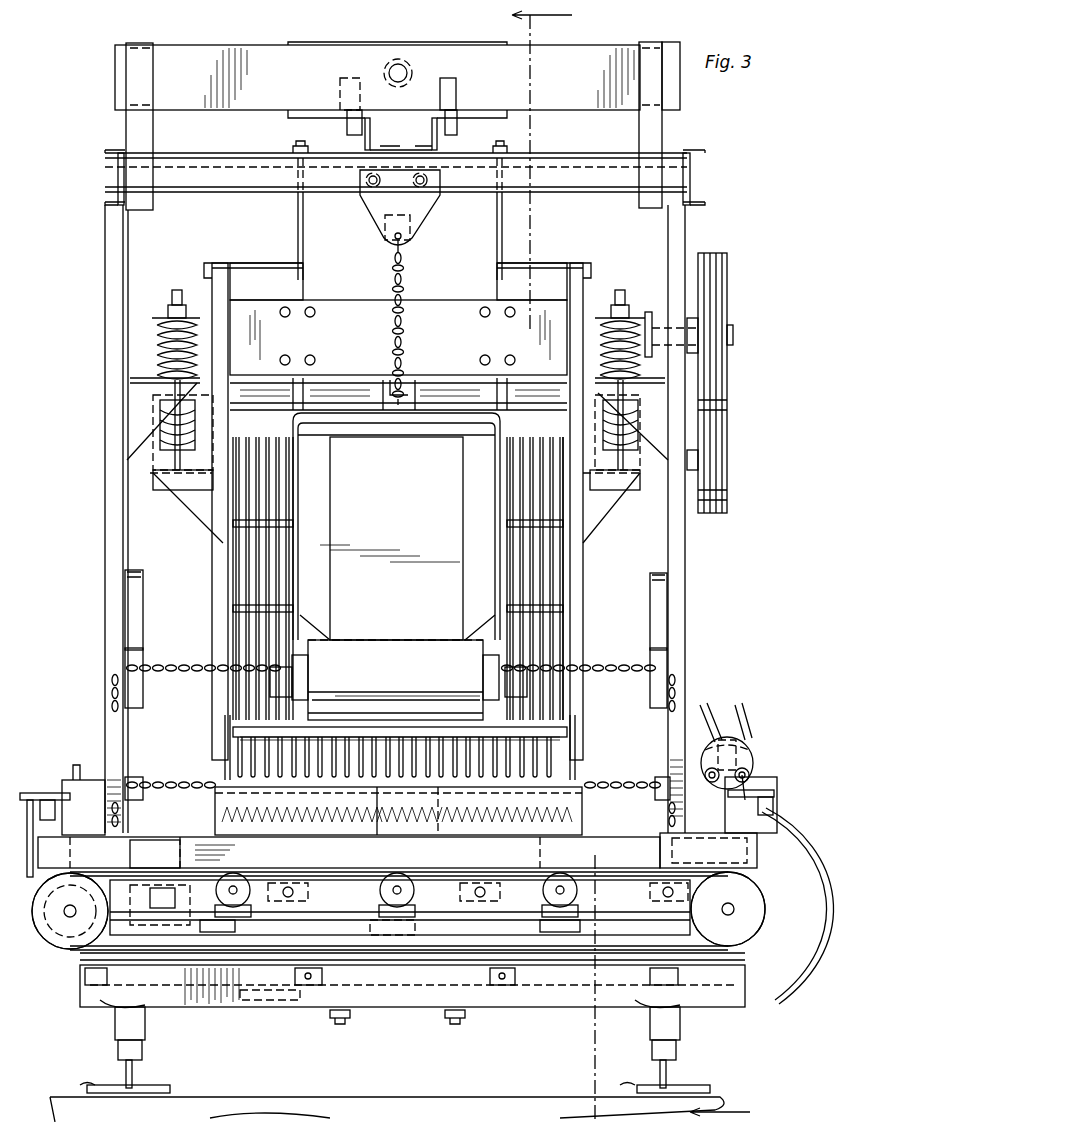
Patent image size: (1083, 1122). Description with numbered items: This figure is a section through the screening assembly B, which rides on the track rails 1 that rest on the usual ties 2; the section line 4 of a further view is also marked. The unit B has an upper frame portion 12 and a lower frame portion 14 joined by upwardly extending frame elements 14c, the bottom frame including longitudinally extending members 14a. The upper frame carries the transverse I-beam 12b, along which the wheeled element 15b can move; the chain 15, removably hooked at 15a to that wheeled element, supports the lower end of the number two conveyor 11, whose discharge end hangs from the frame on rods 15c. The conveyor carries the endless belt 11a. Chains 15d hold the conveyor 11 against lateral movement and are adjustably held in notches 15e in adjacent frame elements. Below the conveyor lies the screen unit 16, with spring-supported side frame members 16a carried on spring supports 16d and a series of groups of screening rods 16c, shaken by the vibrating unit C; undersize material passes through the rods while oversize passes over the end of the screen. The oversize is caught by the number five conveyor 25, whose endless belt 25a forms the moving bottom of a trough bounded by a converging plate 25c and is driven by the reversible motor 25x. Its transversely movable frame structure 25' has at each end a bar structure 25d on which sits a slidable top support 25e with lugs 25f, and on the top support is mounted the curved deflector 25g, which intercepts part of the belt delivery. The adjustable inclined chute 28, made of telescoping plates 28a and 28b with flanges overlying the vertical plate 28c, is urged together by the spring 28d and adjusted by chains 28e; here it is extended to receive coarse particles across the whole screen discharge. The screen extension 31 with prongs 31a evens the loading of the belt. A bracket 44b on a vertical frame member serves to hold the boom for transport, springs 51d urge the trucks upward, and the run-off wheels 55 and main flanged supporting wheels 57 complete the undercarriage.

The track rails 1 is at (115, 1048).
The ties 2 is at (250, 1097).
The section line 4- 4 is at (641, 565).
The number 2 conveyor 11 is at (300, 635).
The endless belt 11a is at (396, 538).
The upper frame portion 12 is at (115, 183).
The I-beam 12b is at (570, 158).
The lower frame portion 14 is at (708, 850).
The longitudinally extending members 14a is at (349, 852).
The upwardly extending frame elements 14c is at (105, 365).
The chain 15 is at (390, 328).
The hook 15a is at (405, 257).
The wheeled element 15b is at (385, 205).
The rods 15c is at (298, 215).
The chains 15d is at (180, 665).
The notches 15e is at (125, 665).
The screen unit 16 is at (216, 545).
The spring-supported side frame members 16a is at (236, 585).
The screening rods 16c is at (243, 595).
The spring supports 16d is at (160, 320).
The number 5 conveyor 25 is at (400, 959).
The transversely movable frame structure 25' is at (412, 980).
The endless belt 25a is at (500, 853).
The plate 25c is at (760, 875).
The end support or bar structure 25d is at (38, 793).
The top support 25e is at (755, 790).
The lugs 25f is at (773, 810).
The curved deflector 25g is at (798, 906).
The reversible motor 25x is at (732, 762).
The adjustable inclined chute 28 is at (333, 841).
The telescoping plate 28a is at (462, 833).
The telescoping plate 28b is at (253, 835).
The vertical plate 28c is at (265, 997).
The spring 28d is at (385, 833).
The chains 28e is at (165, 783).
The screen extension 31 is at (240, 740).
The prongs 31a is at (240, 755).
The bracket 44b is at (82, 778).
The springs 51d is at (345, 1020).
The run-off wheels 55 is at (148, 1030).
The main flanged supporting wheels 57 is at (116, 1026).
The screening assembly B is at (703, 134).
The vibrating unit C is at (266, 293).